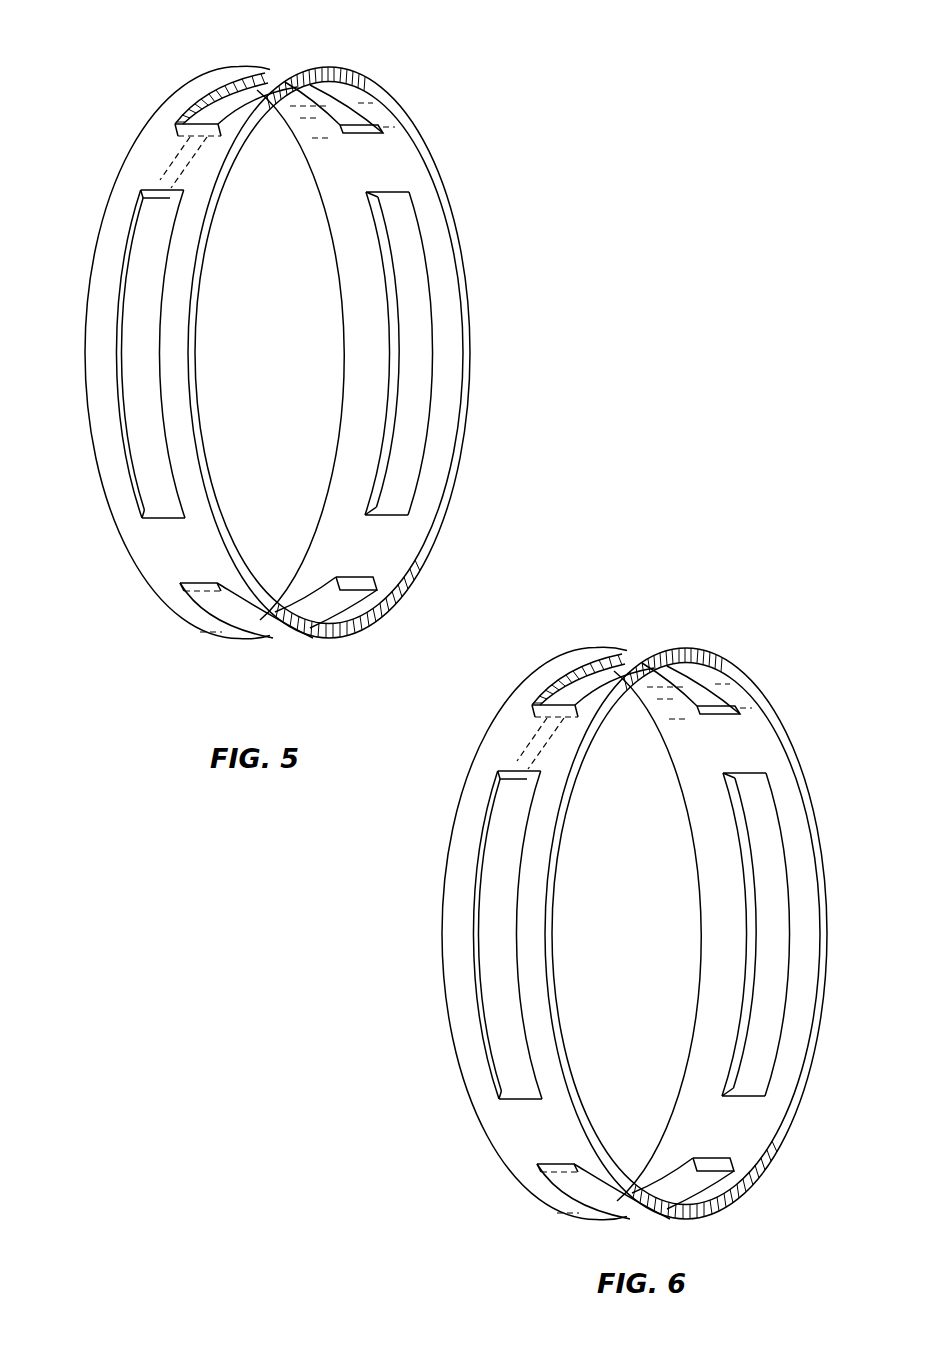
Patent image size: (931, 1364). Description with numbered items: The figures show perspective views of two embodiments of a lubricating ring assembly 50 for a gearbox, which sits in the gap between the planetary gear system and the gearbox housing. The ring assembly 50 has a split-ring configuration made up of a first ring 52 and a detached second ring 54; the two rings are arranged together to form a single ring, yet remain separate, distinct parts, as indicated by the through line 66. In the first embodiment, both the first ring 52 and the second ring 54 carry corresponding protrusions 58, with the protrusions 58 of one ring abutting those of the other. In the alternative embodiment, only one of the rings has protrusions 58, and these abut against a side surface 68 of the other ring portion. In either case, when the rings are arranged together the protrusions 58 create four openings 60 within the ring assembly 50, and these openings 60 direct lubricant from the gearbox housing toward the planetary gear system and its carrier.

In FIG. 5, the ring assembly 50 is at (299, 329).
In FIG. 6, the ring assembly 50 is at (624, 893).
In FIG. 5, the first ring 52 is at (102, 405).
In FIG. 6, the first ring 52 is at (554, 933).
In FIG. 5, the second ring 54 is at (177, 332).
In FIG. 6, the second ring 54 is at (678, 933).
In FIG. 5, the protrusions 58 is at (168, 147).
In FIG. 6, the protrusions 58 is at (606, 682).
In FIG. 5, the openings 60 is at (333, 107).
In FIG. 6, the openings 60 is at (624, 904).
In FIG. 5, the through line 66 is at (175, 165).
In FIG. 6, the through line 66 is at (484, 743).
In FIG. 5, the side surface 68 is at (133, 227).
In FIG. 6, the side surface 68 is at (470, 798).